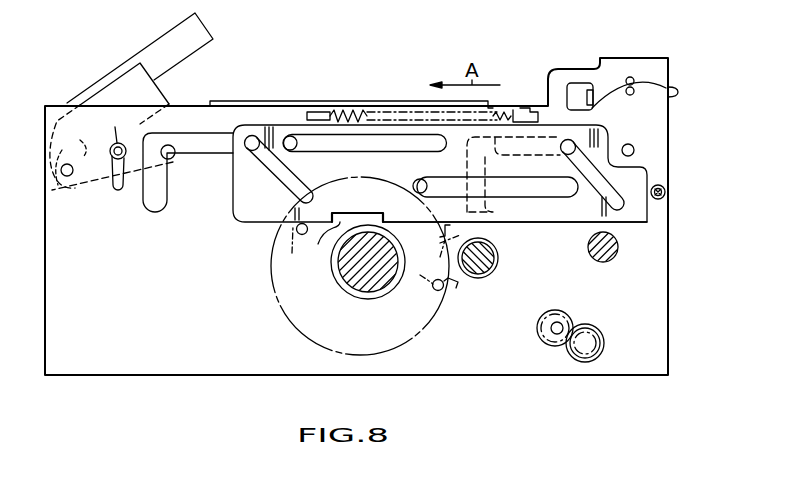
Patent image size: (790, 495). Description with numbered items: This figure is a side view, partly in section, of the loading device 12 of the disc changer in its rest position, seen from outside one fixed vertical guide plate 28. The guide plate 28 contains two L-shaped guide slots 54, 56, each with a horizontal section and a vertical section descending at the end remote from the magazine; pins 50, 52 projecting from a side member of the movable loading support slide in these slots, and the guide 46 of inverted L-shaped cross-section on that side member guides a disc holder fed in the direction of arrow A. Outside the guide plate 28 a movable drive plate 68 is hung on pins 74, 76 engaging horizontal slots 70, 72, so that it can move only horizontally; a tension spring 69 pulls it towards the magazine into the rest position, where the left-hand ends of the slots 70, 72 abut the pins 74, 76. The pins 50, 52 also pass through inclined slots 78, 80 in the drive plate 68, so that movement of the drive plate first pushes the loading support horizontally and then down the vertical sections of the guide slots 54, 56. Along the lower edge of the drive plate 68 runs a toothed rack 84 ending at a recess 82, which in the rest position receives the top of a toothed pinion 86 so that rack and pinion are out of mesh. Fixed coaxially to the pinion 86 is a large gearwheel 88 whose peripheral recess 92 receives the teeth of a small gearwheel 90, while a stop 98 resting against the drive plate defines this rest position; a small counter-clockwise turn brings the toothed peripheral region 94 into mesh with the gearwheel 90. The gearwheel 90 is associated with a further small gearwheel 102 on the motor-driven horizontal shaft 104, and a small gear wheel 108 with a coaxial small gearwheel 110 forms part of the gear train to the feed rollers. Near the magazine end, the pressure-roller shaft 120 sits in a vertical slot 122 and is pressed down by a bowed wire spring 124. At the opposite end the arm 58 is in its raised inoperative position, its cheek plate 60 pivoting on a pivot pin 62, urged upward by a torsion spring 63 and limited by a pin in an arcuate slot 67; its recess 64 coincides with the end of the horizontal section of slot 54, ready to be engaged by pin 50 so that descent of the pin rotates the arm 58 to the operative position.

The loading device 12 is at (652, 158).
The guide plate 28 is at (655, 280).
The guide 46 is at (390, 101).
The pin 50 is at (251, 135).
The pin 52 is at (572, 142).
The L-shaped guide slot 54 is at (193, 135).
The L-shaped guide slot 56 is at (500, 157).
The arm 58 is at (160, 45).
The cheek plate 60 is at (165, 90).
The pivot pin 62 is at (69, 178).
The torsion spring 63 is at (100, 188).
The recess 64 is at (172, 157).
The arcuate slot 67 is at (121, 192).
The drive plate 68 is at (231, 199).
The tension spring 69 is at (345, 108).
The horizontal slot 70 is at (397, 142).
The horizontal slot 72 is at (516, 190).
The pin 74 is at (293, 149).
The pin 76 is at (414, 188).
The inclined slot 78 is at (272, 172).
The inclined slot 80 is at (602, 190).
The recess 82 is at (340, 238).
The toothed rack 84 is at (533, 224).
The toothed pinion 86 is at (369, 299).
The large gearwheel 88 is at (272, 280).
The small gearwheel 90 is at (477, 279).
The recess 92 is at (462, 237).
The peripheral region 94 is at (434, 258).
The stop 98 is at (289, 254).
The further small gearwheel 102 is at (572, 310).
The horizontal shaft 104 is at (556, 322).
The small gear wheel 108 is at (604, 345).
The small gearwheel 110 is at (600, 329).
The horizontal shaft 120 is at (632, 95).
The vertical slot 122 is at (634, 79).
The bowed wire spring 124 is at (607, 92).